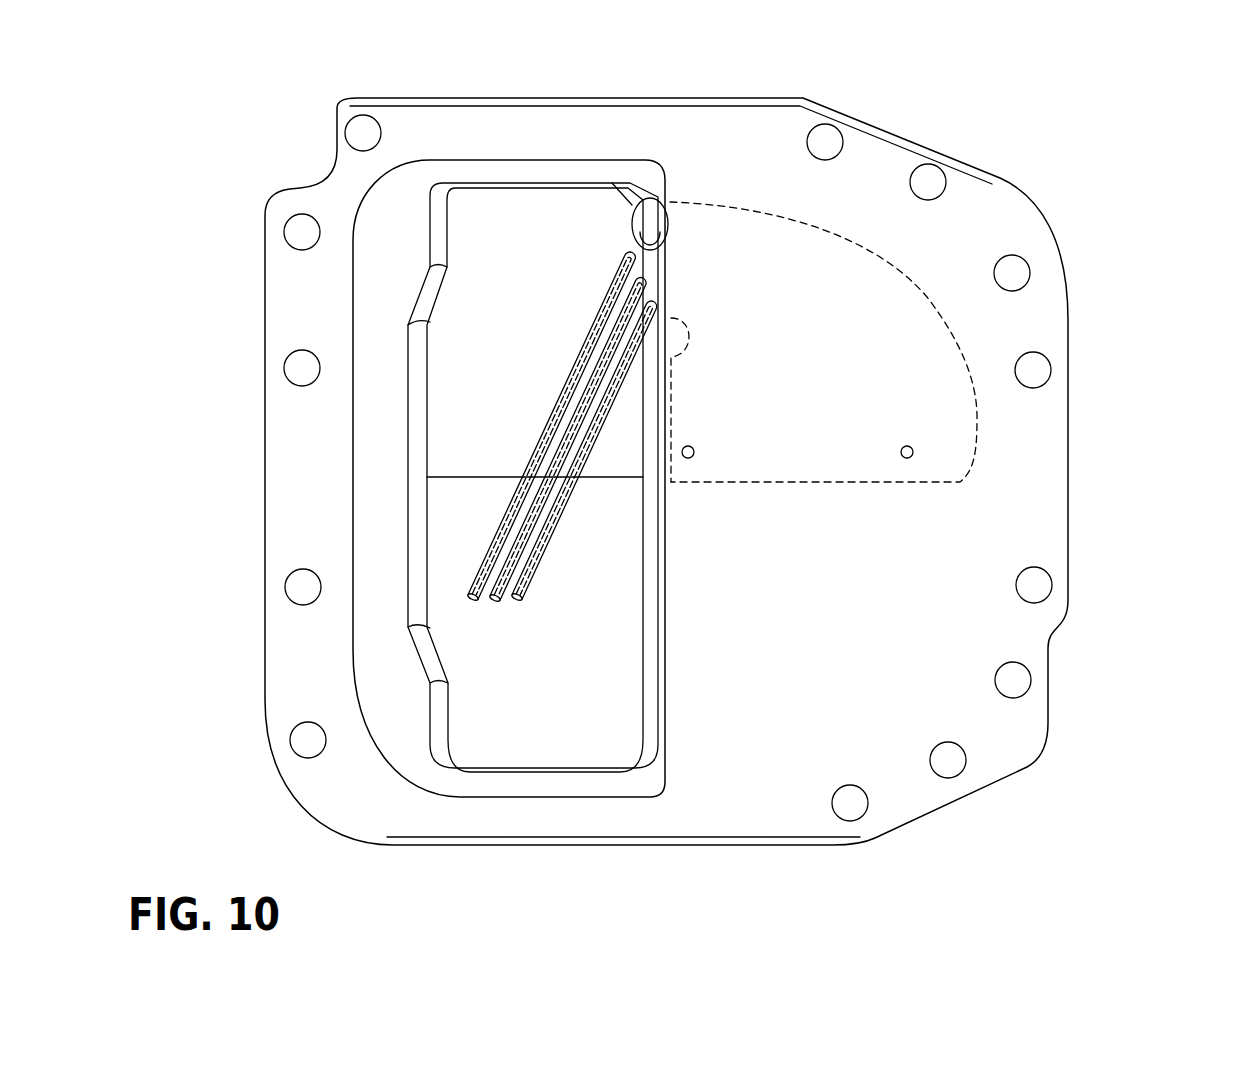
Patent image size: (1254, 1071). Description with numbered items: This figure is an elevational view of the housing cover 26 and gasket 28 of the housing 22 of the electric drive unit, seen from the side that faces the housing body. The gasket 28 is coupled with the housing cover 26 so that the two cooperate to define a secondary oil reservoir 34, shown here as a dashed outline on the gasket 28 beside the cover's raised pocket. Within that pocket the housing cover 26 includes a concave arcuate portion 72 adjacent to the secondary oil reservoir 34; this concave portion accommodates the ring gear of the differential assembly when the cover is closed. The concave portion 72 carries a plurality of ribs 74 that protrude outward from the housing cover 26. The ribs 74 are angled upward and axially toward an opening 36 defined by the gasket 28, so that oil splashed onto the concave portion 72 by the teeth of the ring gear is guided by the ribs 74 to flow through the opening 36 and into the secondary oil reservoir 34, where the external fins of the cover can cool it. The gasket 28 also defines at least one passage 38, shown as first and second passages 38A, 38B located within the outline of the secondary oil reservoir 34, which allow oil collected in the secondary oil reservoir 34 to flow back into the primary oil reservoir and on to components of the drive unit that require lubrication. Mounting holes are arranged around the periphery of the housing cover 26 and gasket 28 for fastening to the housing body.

The housing 22 is at (922, 103).
The housing cover 26 is at (587, 710).
The gasket 28 is at (837, 672).
The secondary oil reservoir 34 is at (918, 283).
The opening 36 is at (655, 268).
The passage 38 is at (944, 582).
The first passage 38A is at (692, 458).
The second passage 38B is at (913, 455).
The concave arcuate portion 72 is at (557, 563).
The ribs 74 is at (617, 360).